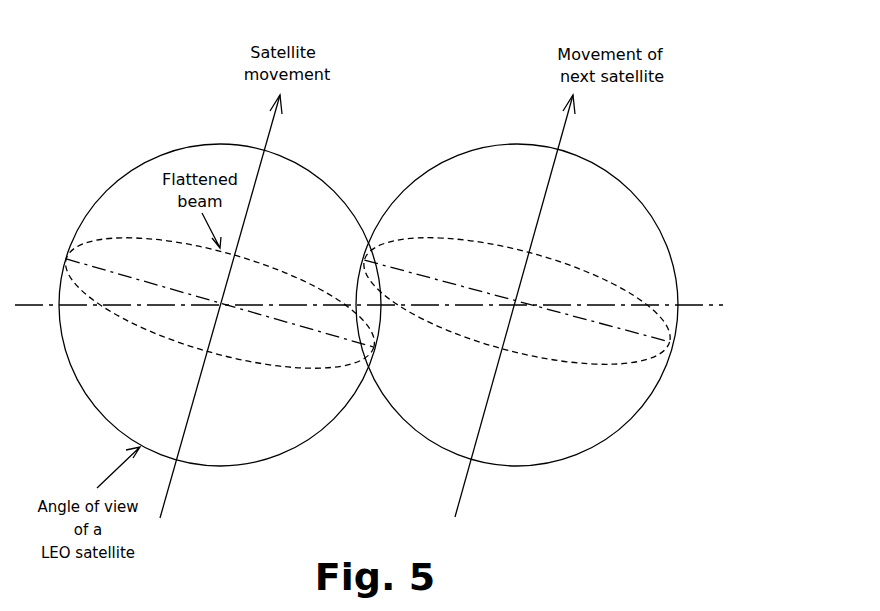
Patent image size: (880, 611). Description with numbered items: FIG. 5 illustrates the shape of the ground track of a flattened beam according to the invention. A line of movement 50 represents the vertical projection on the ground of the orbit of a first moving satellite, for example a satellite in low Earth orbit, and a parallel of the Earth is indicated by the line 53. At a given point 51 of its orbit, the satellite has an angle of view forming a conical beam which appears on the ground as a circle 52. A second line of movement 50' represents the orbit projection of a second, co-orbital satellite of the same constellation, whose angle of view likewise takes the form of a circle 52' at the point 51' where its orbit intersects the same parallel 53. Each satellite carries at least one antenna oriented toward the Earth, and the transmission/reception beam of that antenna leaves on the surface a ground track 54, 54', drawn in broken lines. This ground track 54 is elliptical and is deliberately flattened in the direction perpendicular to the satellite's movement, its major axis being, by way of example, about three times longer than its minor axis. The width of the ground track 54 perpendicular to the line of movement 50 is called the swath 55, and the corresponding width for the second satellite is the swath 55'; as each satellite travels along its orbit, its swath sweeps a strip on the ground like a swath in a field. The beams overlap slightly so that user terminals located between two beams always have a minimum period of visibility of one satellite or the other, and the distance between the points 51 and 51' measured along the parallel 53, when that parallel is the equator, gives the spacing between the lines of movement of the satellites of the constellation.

The line of movement 50 is at (280, 306).
The point of the orbit 51 is at (239, 414).
The circle 52 is at (220, 242).
The parallel of the Earth 53 is at (705, 305).
The ground track 54 is at (219, 333).
The swath 55 is at (220, 222).
The line of movement 50' is at (515, 259).
The point of intersection 51' is at (585, 211).
The circle 52' is at (527, 289).
The ground track 54' is at (516, 357).
The swath 55' is at (516, 214).